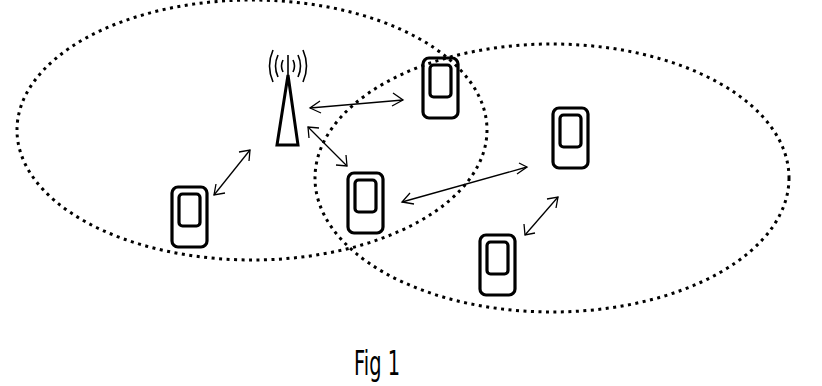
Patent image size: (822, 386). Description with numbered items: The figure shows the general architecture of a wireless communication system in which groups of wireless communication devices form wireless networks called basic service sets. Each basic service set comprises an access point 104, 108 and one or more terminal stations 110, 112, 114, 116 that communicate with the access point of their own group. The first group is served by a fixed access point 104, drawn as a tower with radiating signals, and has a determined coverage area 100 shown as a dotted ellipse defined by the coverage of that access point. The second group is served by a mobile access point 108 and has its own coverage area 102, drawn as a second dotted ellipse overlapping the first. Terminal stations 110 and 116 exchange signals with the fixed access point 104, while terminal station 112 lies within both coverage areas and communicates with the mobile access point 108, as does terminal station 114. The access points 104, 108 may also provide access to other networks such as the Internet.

The coverage area 100 is at (130, 69).
The coverage area 102 is at (720, 122).
The access point 104 is at (277, 125).
The access point 108 is at (554, 111).
The terminal station 110 is at (173, 190).
The terminal station 112 is at (349, 175).
The terminal station 114 is at (481, 238).
The terminal station 116 is at (424, 59).